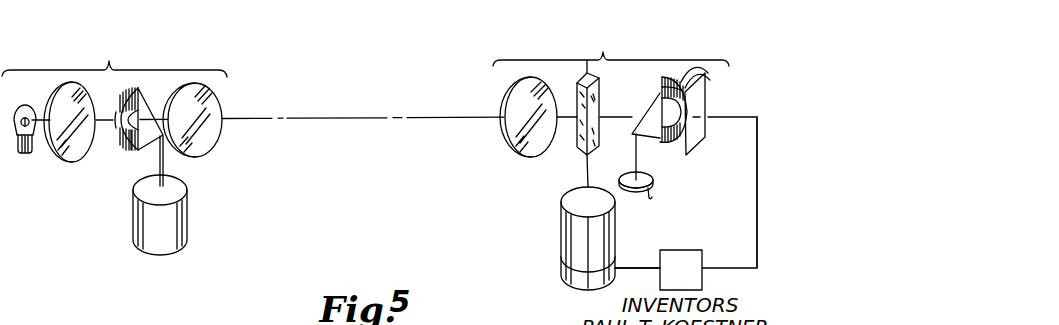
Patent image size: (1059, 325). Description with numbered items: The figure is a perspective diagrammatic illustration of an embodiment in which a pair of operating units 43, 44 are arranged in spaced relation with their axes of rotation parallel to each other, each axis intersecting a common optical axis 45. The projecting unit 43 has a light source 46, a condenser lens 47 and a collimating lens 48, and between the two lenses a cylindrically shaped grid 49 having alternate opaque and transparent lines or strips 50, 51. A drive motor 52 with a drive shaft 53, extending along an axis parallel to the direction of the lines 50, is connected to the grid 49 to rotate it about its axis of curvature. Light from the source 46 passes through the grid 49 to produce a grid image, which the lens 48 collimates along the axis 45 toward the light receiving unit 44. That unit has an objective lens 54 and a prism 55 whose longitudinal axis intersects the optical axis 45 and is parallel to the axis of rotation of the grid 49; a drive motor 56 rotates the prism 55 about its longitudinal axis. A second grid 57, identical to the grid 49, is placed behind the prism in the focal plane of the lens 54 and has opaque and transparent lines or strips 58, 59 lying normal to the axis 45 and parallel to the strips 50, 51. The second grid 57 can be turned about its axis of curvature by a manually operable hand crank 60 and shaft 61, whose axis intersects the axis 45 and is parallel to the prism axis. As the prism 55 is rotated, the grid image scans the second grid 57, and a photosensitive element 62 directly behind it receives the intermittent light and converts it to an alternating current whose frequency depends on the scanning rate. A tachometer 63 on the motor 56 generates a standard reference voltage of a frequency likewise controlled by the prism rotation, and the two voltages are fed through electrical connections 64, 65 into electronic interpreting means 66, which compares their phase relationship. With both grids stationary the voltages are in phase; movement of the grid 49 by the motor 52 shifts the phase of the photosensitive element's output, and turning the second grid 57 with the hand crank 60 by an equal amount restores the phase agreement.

The operating unit 43 is at (114, 57).
The light receiving unit 44 is at (611, 46).
The optical axis 45 is at (334, 117).
The light source 46 is at (23, 104).
The condenser lens 47 is at (78, 84).
The collimating lens 48 is at (208, 92).
The cylindrically shaped grid 49 is at (139, 92).
The opaque lines or strips 50 is at (131, 152).
The transparent lines or strips 51 is at (116, 148).
The drive motor 52 is at (187, 222).
The drive shaft 53 is at (164, 163).
The objective lens 54 is at (521, 93).
The prism 55 is at (598, 91).
The drive motor 56 is at (562, 220).
The second grid 57 is at (678, 83).
The opaque lines or strips 58 is at (661, 87).
The transparent lines or strips 59 is at (707, 80).
The hand crank 60 is at (636, 192).
The shaft 61 is at (637, 156).
The photosensitive element 62 is at (698, 143).
The tachometer 63 is at (564, 268).
The electrical connection 64 is at (633, 268).
The electrical connection 65 is at (757, 196).
The electronic interpreting means 66 is at (682, 250).